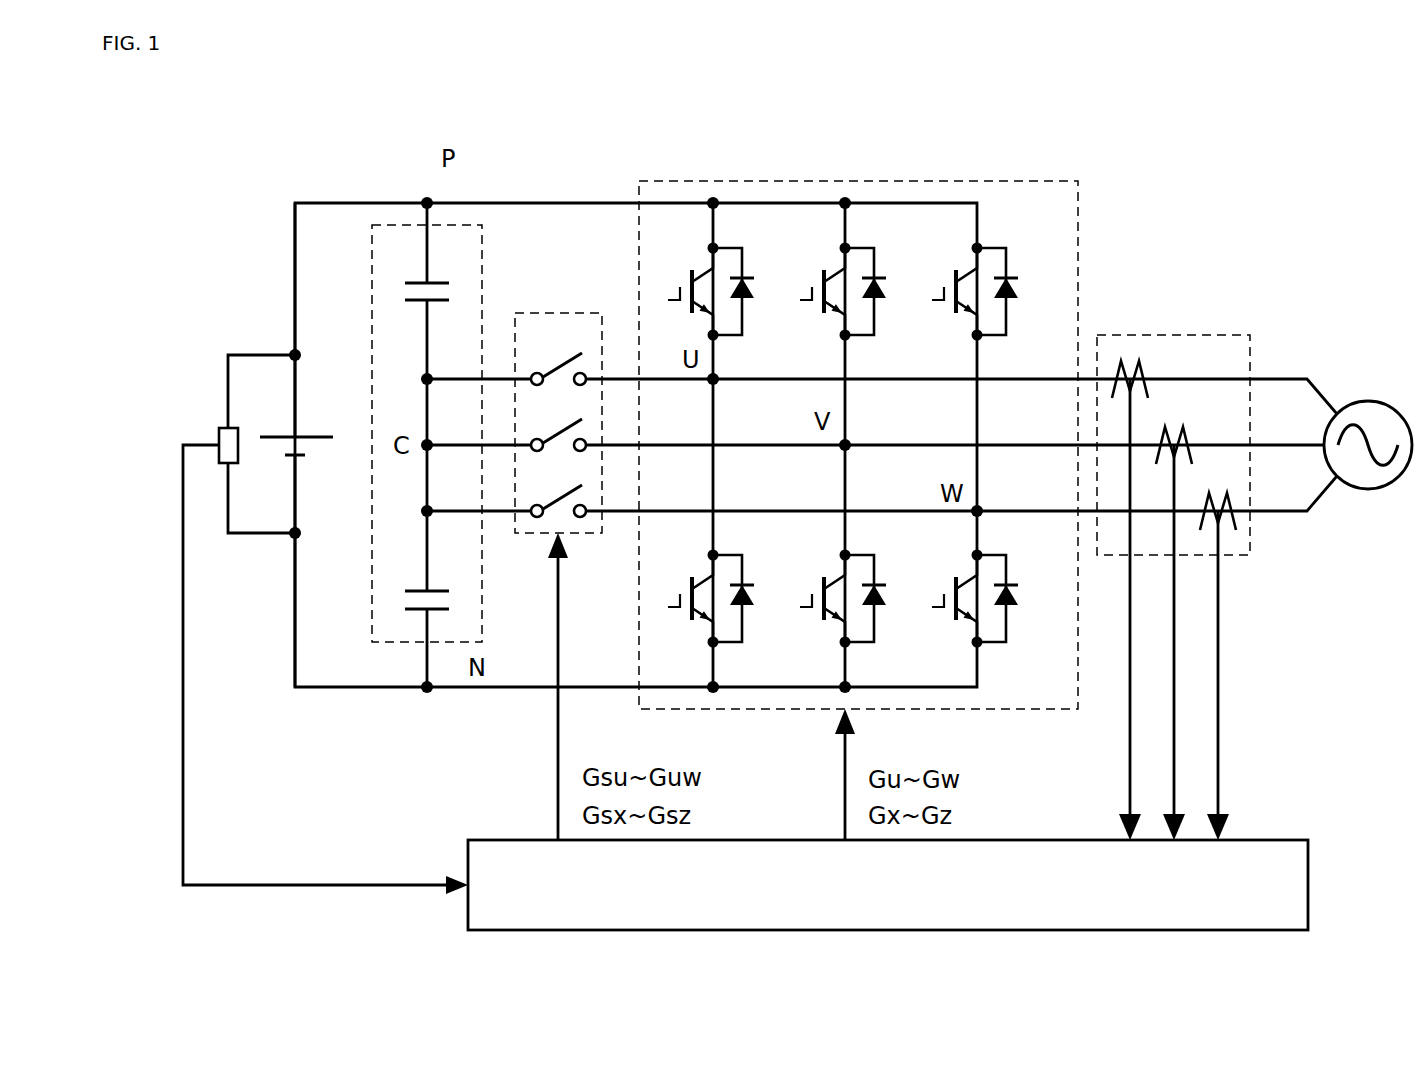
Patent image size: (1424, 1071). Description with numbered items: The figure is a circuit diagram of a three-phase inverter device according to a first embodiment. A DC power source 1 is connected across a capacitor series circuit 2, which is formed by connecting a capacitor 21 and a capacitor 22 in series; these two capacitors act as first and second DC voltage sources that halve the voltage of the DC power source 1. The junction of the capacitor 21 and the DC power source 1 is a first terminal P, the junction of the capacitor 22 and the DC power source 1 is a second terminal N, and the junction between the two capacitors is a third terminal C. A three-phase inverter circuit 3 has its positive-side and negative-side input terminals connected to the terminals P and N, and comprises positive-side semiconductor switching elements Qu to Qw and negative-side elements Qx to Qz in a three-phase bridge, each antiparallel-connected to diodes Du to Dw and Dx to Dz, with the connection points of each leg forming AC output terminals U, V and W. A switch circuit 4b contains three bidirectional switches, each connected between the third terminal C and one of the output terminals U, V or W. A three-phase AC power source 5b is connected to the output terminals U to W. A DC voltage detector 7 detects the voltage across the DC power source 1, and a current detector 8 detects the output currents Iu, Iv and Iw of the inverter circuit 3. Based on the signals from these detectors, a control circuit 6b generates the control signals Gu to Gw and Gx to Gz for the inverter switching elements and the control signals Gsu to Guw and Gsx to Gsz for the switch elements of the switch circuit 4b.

The DC power source 1 is at (318, 432).
The capacitor series circuit 2 is at (449, 445).
The capacitor 21 is at (415, 270).
The capacitor 22 is at (415, 586).
The three-phase inverter circuit 3 is at (845, 181).
The switch circuit 4b is at (558, 313).
The three-phase AC power source 5b is at (1375, 403).
The control circuit 6b is at (1272, 840).
The DC voltage detector 7 is at (220, 428).
The current detector 8 is at (1160, 335).